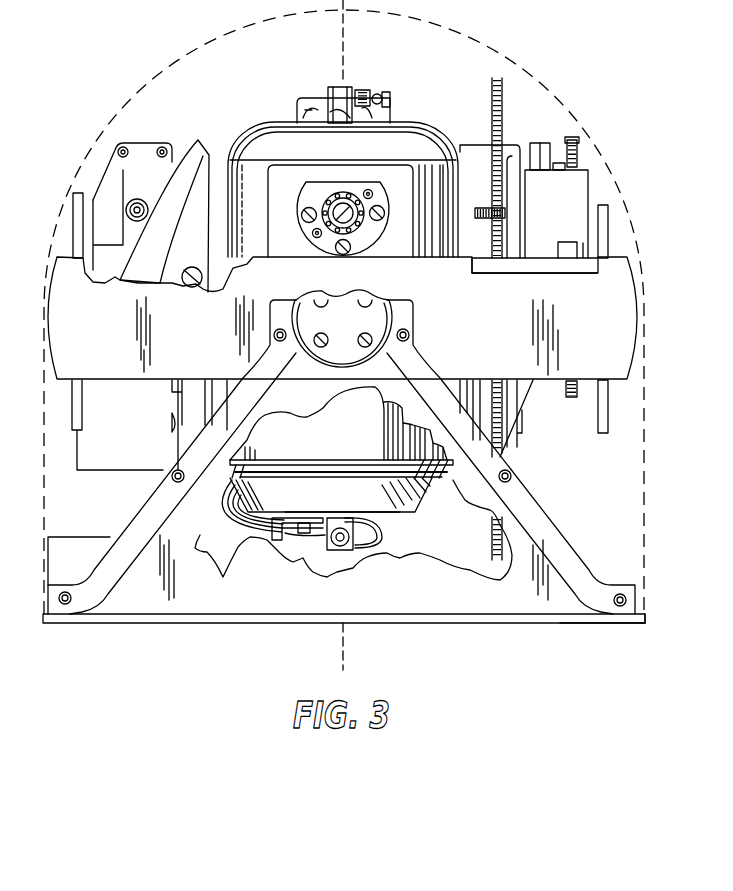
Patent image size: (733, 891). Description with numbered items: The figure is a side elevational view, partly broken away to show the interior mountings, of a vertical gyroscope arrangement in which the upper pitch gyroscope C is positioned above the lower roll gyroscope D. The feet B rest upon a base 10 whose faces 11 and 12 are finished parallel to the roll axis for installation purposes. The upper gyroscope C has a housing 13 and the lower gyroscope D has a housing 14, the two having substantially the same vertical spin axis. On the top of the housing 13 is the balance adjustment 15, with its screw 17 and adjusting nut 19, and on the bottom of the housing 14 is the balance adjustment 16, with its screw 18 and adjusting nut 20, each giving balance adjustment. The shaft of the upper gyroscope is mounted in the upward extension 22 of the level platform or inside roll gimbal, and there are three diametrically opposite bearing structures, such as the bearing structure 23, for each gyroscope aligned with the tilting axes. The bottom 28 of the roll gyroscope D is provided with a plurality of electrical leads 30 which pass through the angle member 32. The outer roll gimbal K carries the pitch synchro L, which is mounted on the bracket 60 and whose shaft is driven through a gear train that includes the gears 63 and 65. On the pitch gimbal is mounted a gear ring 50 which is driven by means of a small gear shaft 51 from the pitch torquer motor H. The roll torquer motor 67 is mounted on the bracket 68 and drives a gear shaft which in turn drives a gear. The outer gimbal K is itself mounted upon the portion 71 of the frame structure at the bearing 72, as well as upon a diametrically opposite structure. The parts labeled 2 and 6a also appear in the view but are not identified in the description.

The motor mounting plate 2 is at (382, 215).
The adjusting screw 6a is at (145, 211).
The base 10 is at (497, 618).
The face of base 11 is at (646, 619).
The face of base 12 is at (590, 618).
The housing 13 is at (458, 192).
The housing 14 is at (343, 455).
The balance adjustment 15 is at (391, 93).
The balance adjustment 16 is at (353, 553).
The screw 17 is at (365, 88).
The screw 18 is at (340, 540).
The adjusting nut 19 is at (378, 92).
The adjusting nut 20 is at (367, 537).
The upward extension 22 is at (408, 248).
The bearing structure 23 is at (358, 205).
The bottom of roll gyroscope 28 is at (290, 540).
The electrical leads 30 is at (222, 537).
The angle member 32 is at (275, 545).
The gear ring 50 is at (502, 78).
The gear shaft 51 is at (498, 210).
The bracket 60 is at (542, 144).
The gear 63 is at (578, 143).
The gear 65 is at (568, 400).
The roll torquer motor 67 is at (140, 188).
The bracket 68 is at (103, 180).
The portion of frame structure 71 is at (388, 362).
The bearing 72 is at (345, 352).
The feet B is at (55, 598).
The upper pitch gyroscope C is at (422, 127).
The lower roll gyroscope D is at (418, 513).
The pitch torquer H is at (583, 185).
The outer roll gimbal K is at (622, 328).
The pitch synchro L is at (461, 152).